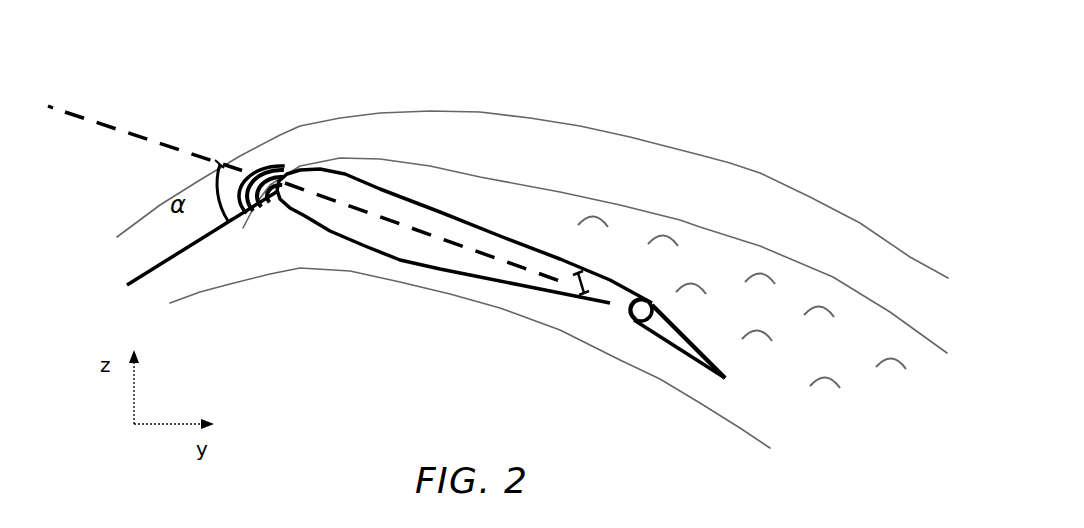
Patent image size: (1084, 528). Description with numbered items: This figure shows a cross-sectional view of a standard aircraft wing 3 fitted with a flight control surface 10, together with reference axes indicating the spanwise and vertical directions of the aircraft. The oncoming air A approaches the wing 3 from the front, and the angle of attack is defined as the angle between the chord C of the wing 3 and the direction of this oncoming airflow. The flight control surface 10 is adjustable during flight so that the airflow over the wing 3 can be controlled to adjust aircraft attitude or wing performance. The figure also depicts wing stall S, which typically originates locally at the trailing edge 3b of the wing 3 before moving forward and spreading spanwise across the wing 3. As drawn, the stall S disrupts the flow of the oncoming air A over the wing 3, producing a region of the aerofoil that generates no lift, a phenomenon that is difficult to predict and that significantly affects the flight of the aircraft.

The wing 3 is at (385, 202).
The trailing edge 3b is at (655, 320).
The flight control surface 10 is at (650, 324).
The wing stall S is at (742, 254).
The chord C is at (102, 120).
The oncoming air A is at (180, 248).